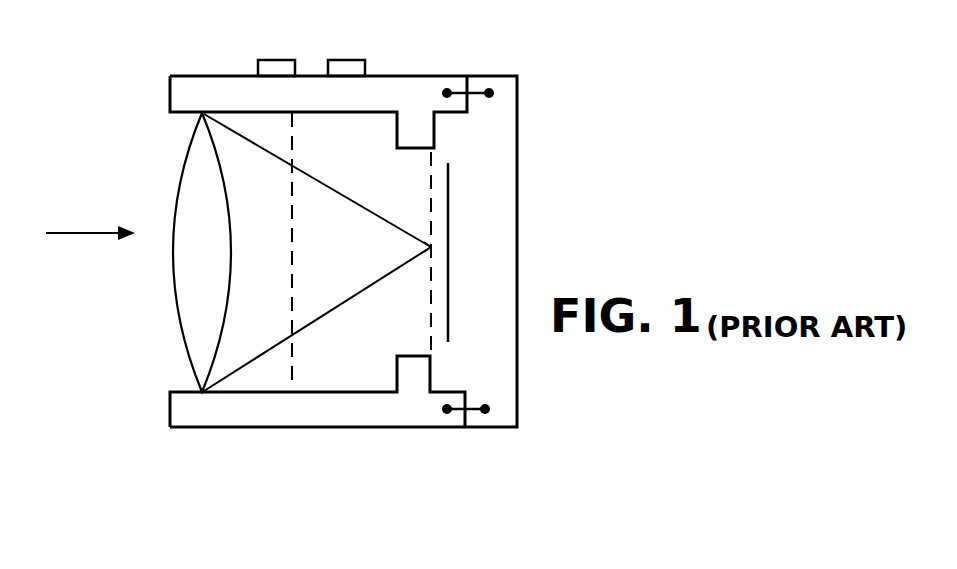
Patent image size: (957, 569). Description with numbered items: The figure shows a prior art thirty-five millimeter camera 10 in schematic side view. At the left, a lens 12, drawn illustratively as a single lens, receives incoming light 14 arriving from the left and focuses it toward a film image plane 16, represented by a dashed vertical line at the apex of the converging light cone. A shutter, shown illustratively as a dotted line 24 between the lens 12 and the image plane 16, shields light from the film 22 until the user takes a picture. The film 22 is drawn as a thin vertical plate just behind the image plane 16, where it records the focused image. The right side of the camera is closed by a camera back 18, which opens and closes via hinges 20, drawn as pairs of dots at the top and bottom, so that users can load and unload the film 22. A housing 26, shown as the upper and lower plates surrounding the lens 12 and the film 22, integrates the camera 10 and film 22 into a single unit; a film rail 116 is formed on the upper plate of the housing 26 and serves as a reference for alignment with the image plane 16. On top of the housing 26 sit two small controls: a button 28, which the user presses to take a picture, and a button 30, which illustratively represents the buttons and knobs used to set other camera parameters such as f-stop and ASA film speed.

The camera 10 is at (126, 450).
The lens 12 is at (202, 252).
The incoming light 14 is at (82, 231).
The film image plane 16 is at (427, 328).
The camera back 18 is at (497, 193).
The hinges 20 is at (476, 93).
The film 22 is at (449, 295).
The shutter 24 is at (310, 143).
The housing 26 is at (238, 408).
The button 28 is at (272, 58).
The button 30 is at (347, 58).
The film rail 116 is at (423, 137).